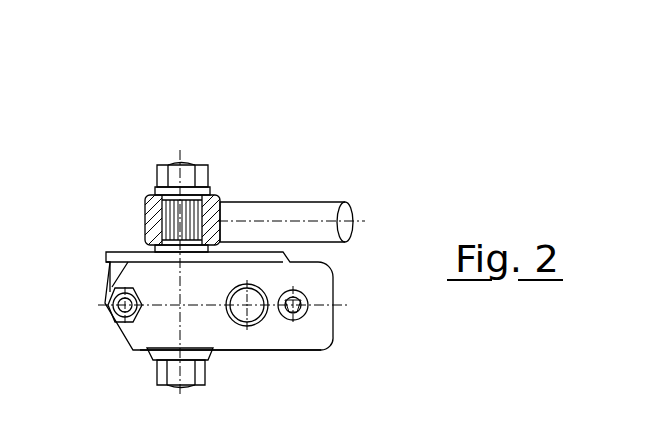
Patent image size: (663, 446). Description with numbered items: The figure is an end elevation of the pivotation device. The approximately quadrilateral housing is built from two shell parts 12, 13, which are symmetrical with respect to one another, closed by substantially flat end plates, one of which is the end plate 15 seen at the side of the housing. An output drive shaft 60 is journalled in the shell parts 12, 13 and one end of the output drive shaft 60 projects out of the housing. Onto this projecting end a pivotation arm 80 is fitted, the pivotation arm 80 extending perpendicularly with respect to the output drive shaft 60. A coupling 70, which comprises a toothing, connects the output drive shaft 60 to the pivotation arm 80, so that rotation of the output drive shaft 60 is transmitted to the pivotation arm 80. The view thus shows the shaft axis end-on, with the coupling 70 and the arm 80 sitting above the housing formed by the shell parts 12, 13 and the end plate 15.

The shell part 12 is at (335, 277).
The shell part 13 is at (325, 349).
The end plate 15 is at (135, 335).
The output drive shaft 60 is at (187, 163).
The coupling 70 is at (170, 210).
The pivotation arm 80 is at (275, 212).